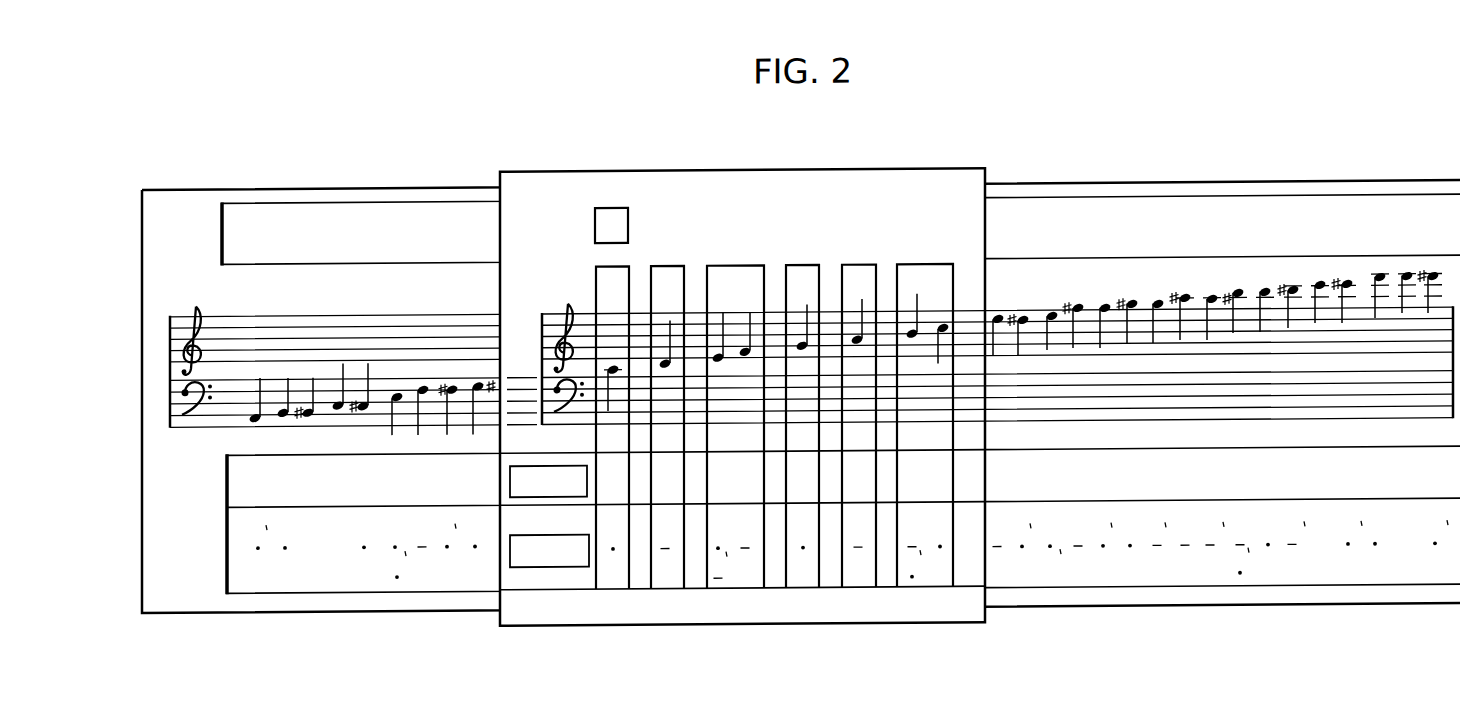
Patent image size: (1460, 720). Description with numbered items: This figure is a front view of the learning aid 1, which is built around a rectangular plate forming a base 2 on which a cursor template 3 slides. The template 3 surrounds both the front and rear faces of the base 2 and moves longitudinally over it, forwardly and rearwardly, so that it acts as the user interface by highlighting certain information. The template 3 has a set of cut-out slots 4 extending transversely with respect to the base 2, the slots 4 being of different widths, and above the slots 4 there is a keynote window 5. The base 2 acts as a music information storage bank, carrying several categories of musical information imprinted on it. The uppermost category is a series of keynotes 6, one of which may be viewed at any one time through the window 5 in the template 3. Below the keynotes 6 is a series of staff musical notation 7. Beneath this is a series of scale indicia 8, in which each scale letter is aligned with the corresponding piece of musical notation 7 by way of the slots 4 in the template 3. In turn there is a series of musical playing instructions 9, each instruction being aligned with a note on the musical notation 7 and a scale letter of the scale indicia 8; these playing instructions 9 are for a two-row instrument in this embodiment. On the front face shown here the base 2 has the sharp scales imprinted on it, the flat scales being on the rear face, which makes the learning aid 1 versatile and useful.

The learning aid 1 is at (1040, 159).
The base 2 is at (293, 607).
The cursor template 3 is at (669, 199).
The cut-out slots 4 is at (650, 594).
The keynote window 5 is at (603, 212).
The keynotes 6 is at (326, 191).
The staff musical notation 7 is at (181, 318).
The scale indicia 8 is at (240, 487).
The musical playing instructions 9 is at (243, 574).